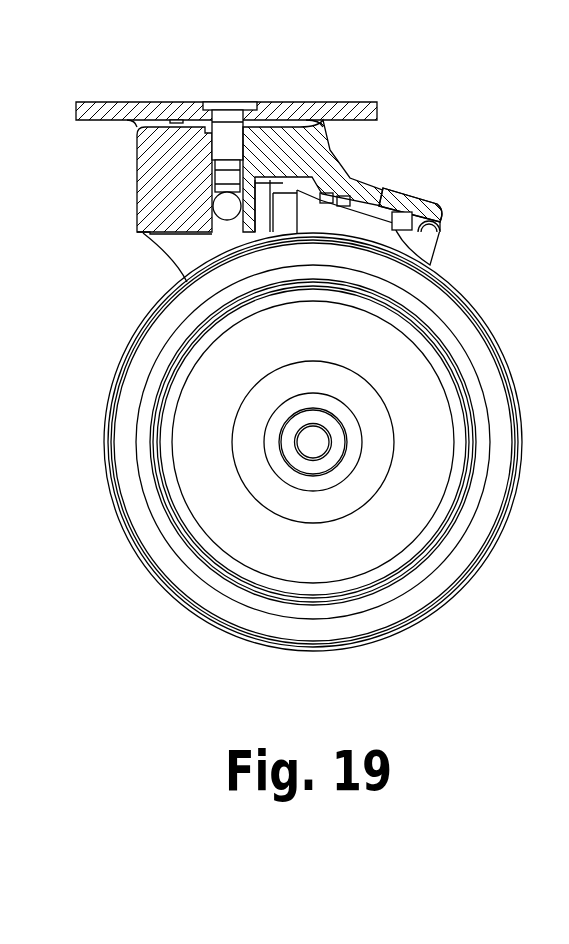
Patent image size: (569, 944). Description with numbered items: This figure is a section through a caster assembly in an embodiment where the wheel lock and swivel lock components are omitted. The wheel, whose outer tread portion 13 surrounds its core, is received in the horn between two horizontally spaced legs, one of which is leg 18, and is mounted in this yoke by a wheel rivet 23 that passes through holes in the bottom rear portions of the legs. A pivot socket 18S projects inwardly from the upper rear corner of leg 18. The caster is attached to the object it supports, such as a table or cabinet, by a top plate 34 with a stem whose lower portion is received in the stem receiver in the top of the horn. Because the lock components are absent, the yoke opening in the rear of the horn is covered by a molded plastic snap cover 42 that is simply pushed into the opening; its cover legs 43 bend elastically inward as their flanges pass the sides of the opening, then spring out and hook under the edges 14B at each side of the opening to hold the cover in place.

The tread portion 13 is at (138, 517).
The wheel rivet 23 is at (313, 443).
The plate 34 is at (302, 102).
The leg 18 is at (180, 252).
The snap cover 42 is at (407, 197).
The cover legs 43 is at (420, 204).
The edges 14B is at (438, 256).
The pivot socket 18S is at (438, 232).